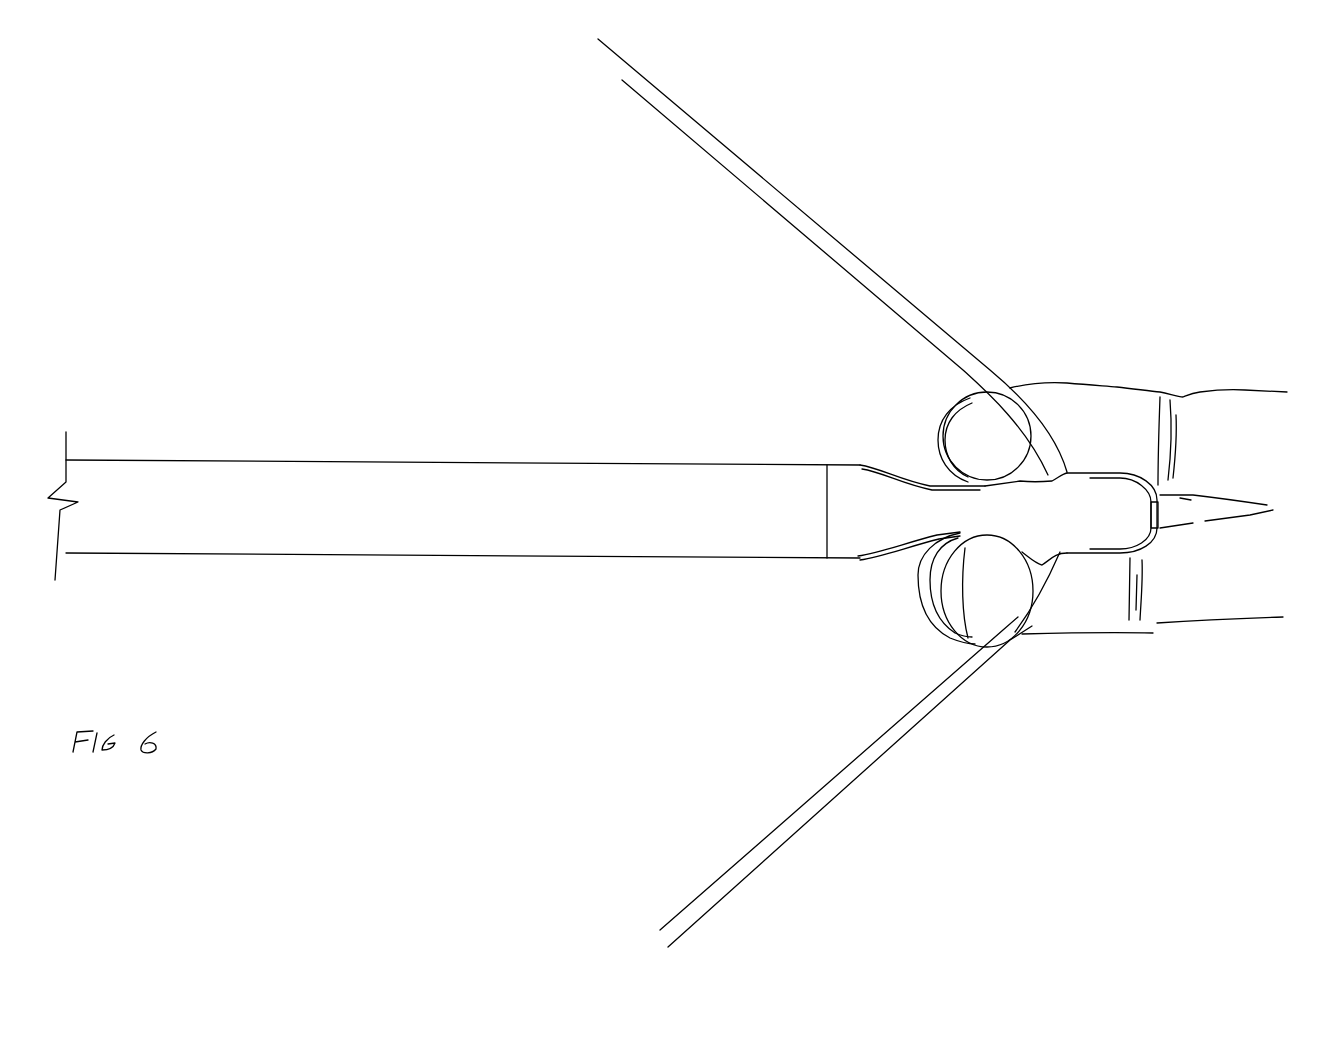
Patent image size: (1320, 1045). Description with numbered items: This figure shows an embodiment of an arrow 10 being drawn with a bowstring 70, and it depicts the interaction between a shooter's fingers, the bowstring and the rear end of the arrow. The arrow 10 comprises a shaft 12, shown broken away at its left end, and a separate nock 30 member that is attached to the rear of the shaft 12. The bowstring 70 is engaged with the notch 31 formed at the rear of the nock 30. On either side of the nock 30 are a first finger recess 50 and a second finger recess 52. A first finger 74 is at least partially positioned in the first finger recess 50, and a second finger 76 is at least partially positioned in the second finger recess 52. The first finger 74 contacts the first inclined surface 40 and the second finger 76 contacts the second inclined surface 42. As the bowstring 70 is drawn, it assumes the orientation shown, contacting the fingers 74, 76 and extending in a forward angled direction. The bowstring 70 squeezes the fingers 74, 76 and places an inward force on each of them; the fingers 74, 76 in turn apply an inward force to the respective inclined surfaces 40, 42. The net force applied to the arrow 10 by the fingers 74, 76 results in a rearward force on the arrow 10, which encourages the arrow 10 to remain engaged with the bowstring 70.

The arrow 10 is at (162, 347).
The shaft 12 is at (304, 538).
The nock 30 is at (832, 562).
The notch 31 is at (1076, 565).
The first inclined surface 40 is at (990, 468).
The second inclined surface 42 is at (992, 565).
The first finger recess 50 is at (902, 477).
The second finger recess 52 is at (917, 547).
The bowstring 70 is at (838, 245).
The first finger 74 is at (998, 416).
The second finger 76 is at (1008, 642).